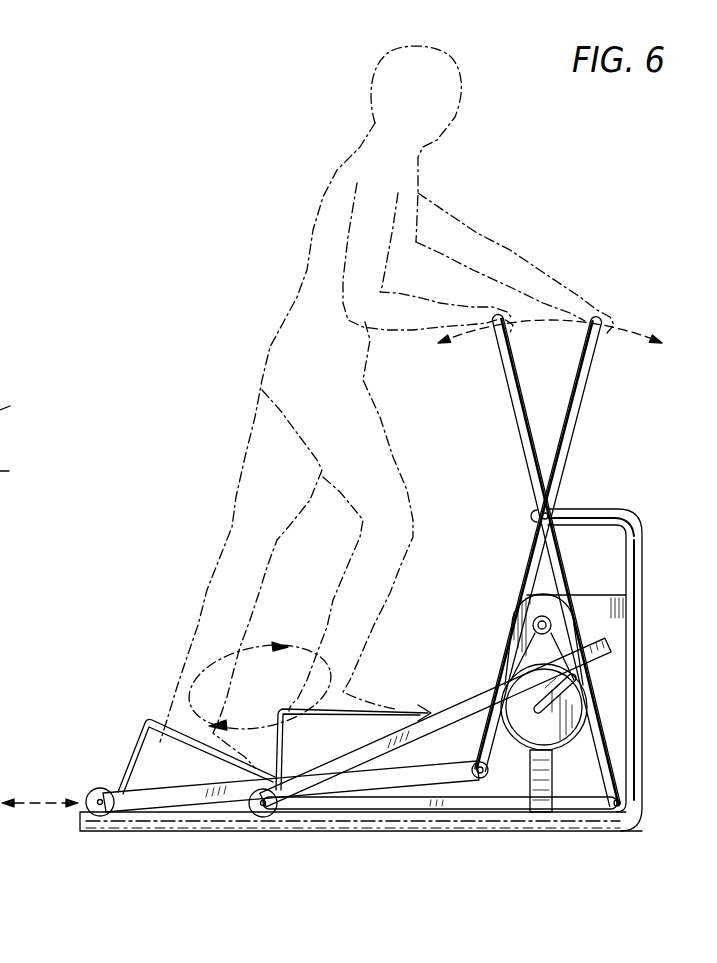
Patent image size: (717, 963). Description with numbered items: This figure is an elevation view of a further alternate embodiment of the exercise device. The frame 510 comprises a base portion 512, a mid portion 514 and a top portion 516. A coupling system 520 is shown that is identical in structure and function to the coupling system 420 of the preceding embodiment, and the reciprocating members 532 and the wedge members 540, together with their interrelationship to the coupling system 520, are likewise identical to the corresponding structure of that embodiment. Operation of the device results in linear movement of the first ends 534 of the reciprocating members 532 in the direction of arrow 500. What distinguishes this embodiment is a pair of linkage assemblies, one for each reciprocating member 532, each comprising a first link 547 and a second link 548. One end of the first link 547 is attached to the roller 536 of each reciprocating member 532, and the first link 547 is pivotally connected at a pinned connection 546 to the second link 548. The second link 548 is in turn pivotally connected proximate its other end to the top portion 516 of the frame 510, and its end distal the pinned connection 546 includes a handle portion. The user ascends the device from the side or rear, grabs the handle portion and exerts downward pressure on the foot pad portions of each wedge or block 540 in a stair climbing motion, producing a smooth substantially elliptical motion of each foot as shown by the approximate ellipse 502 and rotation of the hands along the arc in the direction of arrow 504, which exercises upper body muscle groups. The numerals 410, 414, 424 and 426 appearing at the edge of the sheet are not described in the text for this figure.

The arrow 500 is at (40, 806).
The approximate ellipse 502 is at (218, 672).
The arrow 504 is at (632, 340).
The frame 510 is at (646, 582).
The base portion 512 is at (396, 832).
The mid portion 514 is at (645, 647).
The top portion 516 is at (598, 507).
The coupling system 520 is at (590, 742).
The reciprocating members 532 is at (462, 702).
The first ends 534 is at (122, 808).
The roller 536 is at (100, 788).
The wedge members 540 is at (147, 758).
The pinned connection 546 is at (621, 832).
The first link 547 is at (493, 805).
The second link 548 is at (519, 428).
The frame member 410 is at (28, 470).
The frame member 414 is at (28, 405).
The coupling system 420 is at (28, 722).
The link member 424 is at (24, 662).
The link member 426 is at (20, 761).